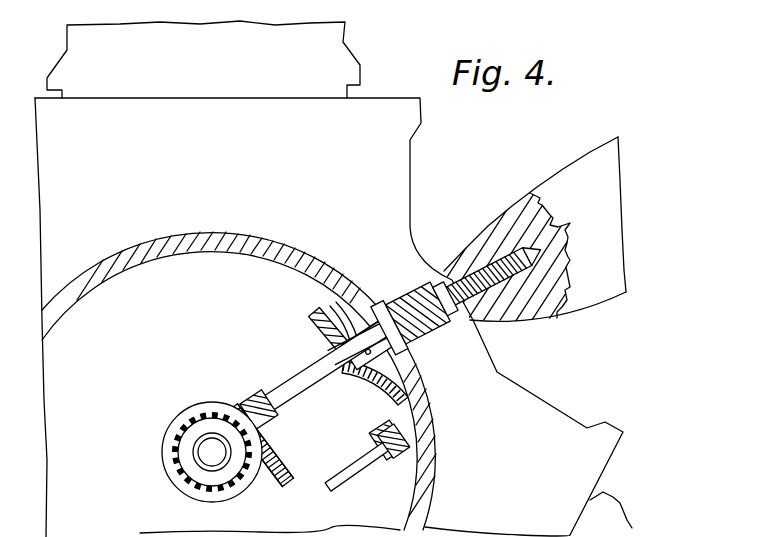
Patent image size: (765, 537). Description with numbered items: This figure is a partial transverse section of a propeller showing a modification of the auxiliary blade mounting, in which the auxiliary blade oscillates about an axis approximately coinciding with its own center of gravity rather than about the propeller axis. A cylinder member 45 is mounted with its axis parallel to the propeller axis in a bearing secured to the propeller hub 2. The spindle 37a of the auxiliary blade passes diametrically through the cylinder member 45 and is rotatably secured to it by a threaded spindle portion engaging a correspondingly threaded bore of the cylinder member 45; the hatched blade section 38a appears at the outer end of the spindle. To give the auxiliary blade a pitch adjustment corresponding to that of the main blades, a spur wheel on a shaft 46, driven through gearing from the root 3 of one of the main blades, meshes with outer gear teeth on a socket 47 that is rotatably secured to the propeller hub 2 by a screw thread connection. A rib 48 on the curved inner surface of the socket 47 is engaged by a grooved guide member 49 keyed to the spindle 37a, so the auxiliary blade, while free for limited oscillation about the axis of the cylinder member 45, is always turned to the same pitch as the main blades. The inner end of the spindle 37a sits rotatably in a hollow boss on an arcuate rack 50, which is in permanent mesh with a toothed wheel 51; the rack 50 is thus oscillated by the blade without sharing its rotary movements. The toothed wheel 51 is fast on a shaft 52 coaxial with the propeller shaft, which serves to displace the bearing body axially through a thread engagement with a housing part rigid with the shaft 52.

The propeller hub 2 is at (427, 462).
The root of main blade 3 is at (333, 72).
The spindle 37a is at (455, 320).
The sector block 38a is at (583, 298).
The cylinder member 45 is at (437, 340).
The shaft 46 is at (355, 463).
The socket 47 is at (373, 393).
The rib 48 is at (330, 340).
The grooved guide member 49 is at (363, 387).
The arcuate rack 50 is at (278, 473).
The toothed wheel 51 is at (228, 485).
The shaft 52 is at (200, 467).